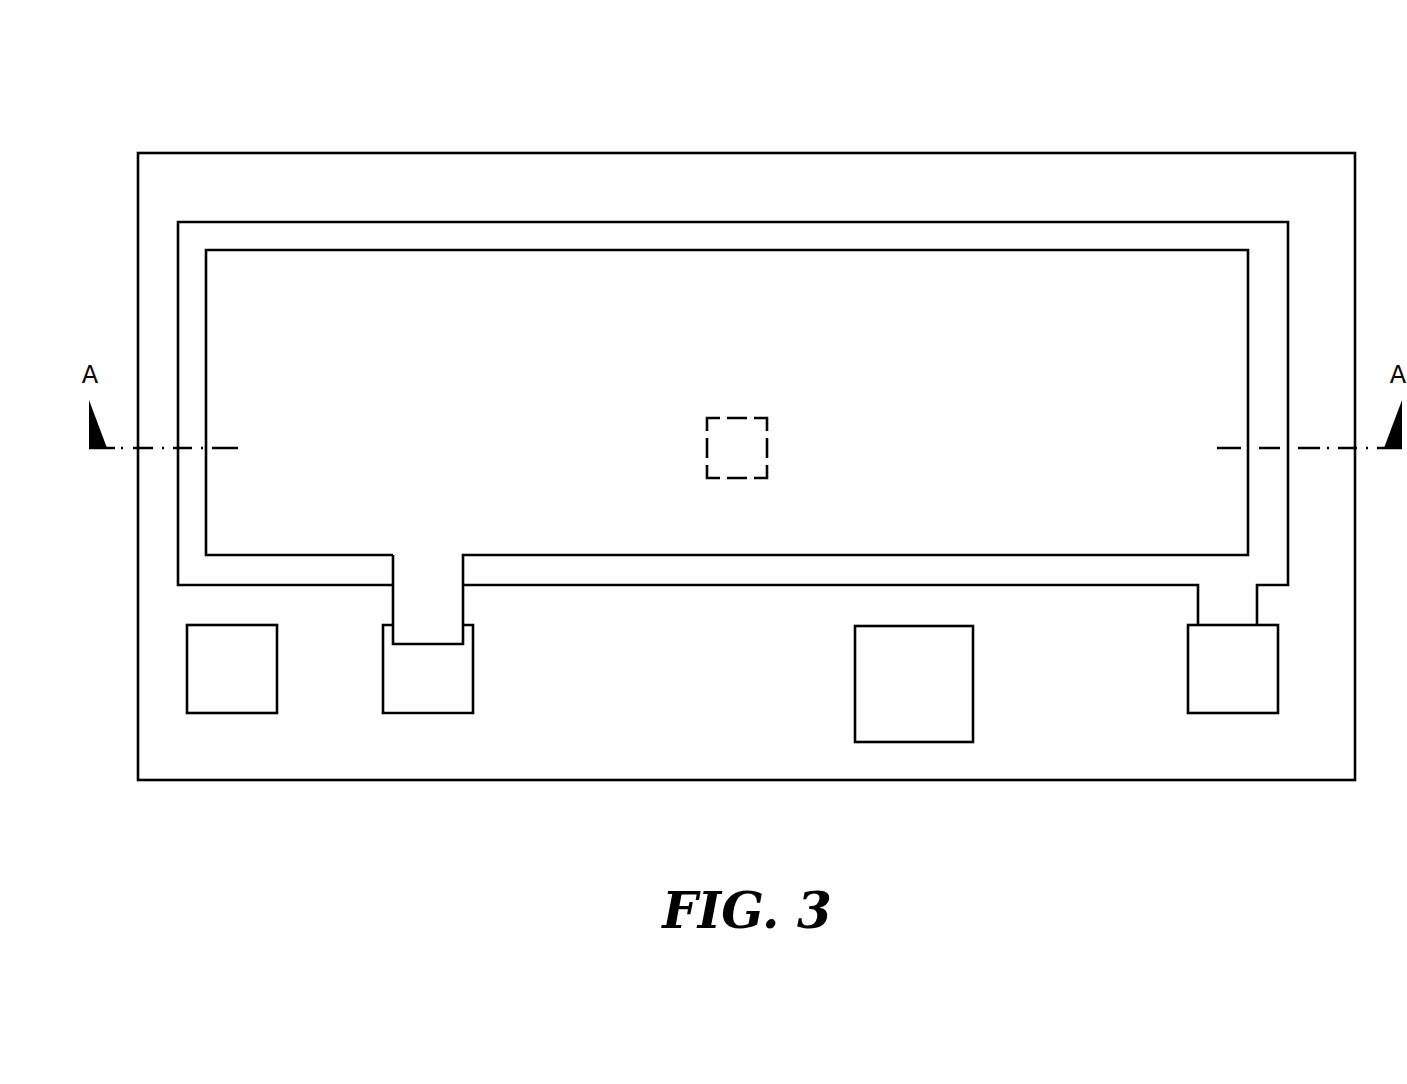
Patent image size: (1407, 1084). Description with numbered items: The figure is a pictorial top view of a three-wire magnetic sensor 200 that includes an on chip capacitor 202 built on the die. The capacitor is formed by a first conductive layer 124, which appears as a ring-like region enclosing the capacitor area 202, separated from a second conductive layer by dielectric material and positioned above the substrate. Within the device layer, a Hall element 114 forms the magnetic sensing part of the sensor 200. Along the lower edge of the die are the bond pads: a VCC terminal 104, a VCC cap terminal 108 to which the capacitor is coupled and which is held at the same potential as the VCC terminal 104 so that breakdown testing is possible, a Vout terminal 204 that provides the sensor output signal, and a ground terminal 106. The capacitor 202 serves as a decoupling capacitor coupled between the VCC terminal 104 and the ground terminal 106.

The three-wire magnetic sensor 200 is at (1195, 108).
The first conductive layer 124 is at (562, 233).
The on chip capacitor 202 is at (253, 313).
The Hall element 114 is at (745, 428).
The VCC terminal 104 is at (232, 700).
The VCC cap terminal 108 is at (436, 703).
The Vout terminal 204 is at (944, 735).
The ground terminal 106 is at (1248, 702).